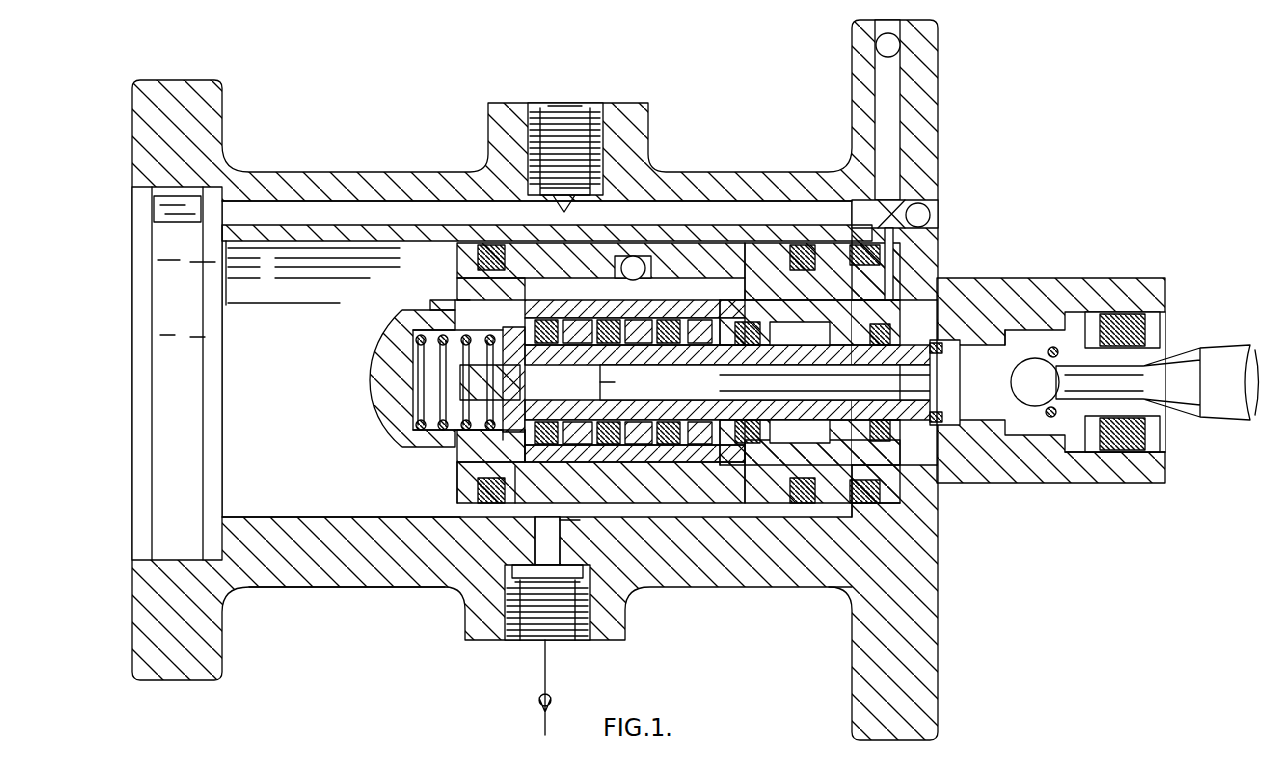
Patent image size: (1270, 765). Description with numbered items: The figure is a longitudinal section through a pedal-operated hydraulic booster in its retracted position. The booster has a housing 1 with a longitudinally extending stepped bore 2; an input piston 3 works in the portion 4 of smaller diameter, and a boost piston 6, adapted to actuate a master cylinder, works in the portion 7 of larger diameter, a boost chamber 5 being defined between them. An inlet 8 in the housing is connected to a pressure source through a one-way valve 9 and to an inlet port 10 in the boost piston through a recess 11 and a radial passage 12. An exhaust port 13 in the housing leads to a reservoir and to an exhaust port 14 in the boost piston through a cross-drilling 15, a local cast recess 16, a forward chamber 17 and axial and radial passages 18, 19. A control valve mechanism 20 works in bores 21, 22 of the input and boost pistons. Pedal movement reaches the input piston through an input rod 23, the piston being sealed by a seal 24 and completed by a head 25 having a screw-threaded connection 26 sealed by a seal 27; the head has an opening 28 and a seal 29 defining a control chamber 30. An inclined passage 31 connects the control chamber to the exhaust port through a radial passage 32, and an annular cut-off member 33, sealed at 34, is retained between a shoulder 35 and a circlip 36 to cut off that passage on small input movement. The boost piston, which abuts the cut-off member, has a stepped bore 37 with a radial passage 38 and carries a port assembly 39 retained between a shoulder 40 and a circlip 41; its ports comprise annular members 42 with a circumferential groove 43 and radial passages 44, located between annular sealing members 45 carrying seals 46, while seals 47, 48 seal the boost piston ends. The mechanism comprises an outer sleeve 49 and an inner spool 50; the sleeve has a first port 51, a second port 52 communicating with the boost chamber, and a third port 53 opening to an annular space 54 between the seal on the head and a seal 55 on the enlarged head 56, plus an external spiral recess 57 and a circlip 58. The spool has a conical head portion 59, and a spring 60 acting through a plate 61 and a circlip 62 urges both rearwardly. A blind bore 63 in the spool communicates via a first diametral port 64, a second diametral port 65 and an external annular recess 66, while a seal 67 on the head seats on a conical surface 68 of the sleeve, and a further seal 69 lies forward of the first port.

The housing 1 is at (942, 74).
The stepped bore 2 is at (292, 520).
The input piston 3 is at (1086, 310).
The bore portion of smaller diameter 4 is at (1066, 470).
The boost chamber 5 is at (786, 254).
The boost piston 6 is at (728, 276).
The bore portion of larger diameter 7 is at (336, 520).
The inlet 8 is at (566, 618).
The one-way valve 9 is at (538, 712).
The inlet port 10 is at (545, 445).
The recess 11 is at (598, 508).
The radial passage 12 is at (575, 490).
The exhaust port 13 is at (572, 112).
The exhaust port 14 is at (626, 260).
The cross-drilling 15 is at (352, 222).
The local cast recess 16 is at (206, 228).
The forward chamber 17 is at (266, 282).
The axial passage 18 is at (456, 288).
The radial passage 19 is at (676, 300).
The control valve mechanism 20 is at (700, 445).
The bore 21 is at (940, 452).
The bore 22 is at (500, 440).
The input rod 23 is at (1210, 362).
The seal 24 is at (1122, 314).
The head 25 is at (741, 447).
The screw-threaded connection 26 is at (820, 448).
The seal 27 is at (776, 505).
The opening 28 is at (819, 264).
The seal 29 is at (718, 448).
The control chamber 30 is at (1008, 345).
The inclined passage 31 is at (940, 325).
The radial passage 32 is at (922, 230).
The annular cut-off member 33 is at (890, 520).
The seal 34 is at (838, 504).
The shoulder 35 is at (886, 446).
The circlip 36 is at (836, 518).
The stepped bore 37 is at (425, 447).
The radial passage 38 is at (432, 310).
The port assembly 39 is at (445, 310).
The shoulder 40 is at (498, 457).
The circlip 41 is at (660, 470).
The annular member 42 is at (636, 448).
The external circumferential groove 43 is at (598, 458).
The radial passages 44 is at (622, 440).
The annular sealing members 45 is at (572, 326).
The seal 46 is at (536, 328).
The seal 47 is at (480, 502).
The seal 48 is at (829, 242).
The sleeve 49 is at (516, 470).
The spool 50 is at (445, 392).
The first port 51 is at (608, 326).
The second port 52 is at (686, 328).
The third port 53 is at (845, 447).
The annular space 54 is at (778, 335).
The seal 55 is at (936, 472).
The enlarged head 56 is at (980, 340).
The external spiral recess 57 is at (696, 300).
The circlip 58 is at (798, 314).
The conical head portion 59 is at (1042, 352).
The spring 60 is at (418, 360).
The plate 61 is at (456, 445).
The circlip 62 is at (490, 382).
The blind bore 63 is at (741, 394).
The first diametral port 64 is at (741, 371).
The second diametral port 65 is at (778, 382).
The external annular recess 66 is at (873, 382).
The seal 67 is at (986, 430).
The conical surface 68 is at (962, 440).
The seal 69 is at (526, 379).